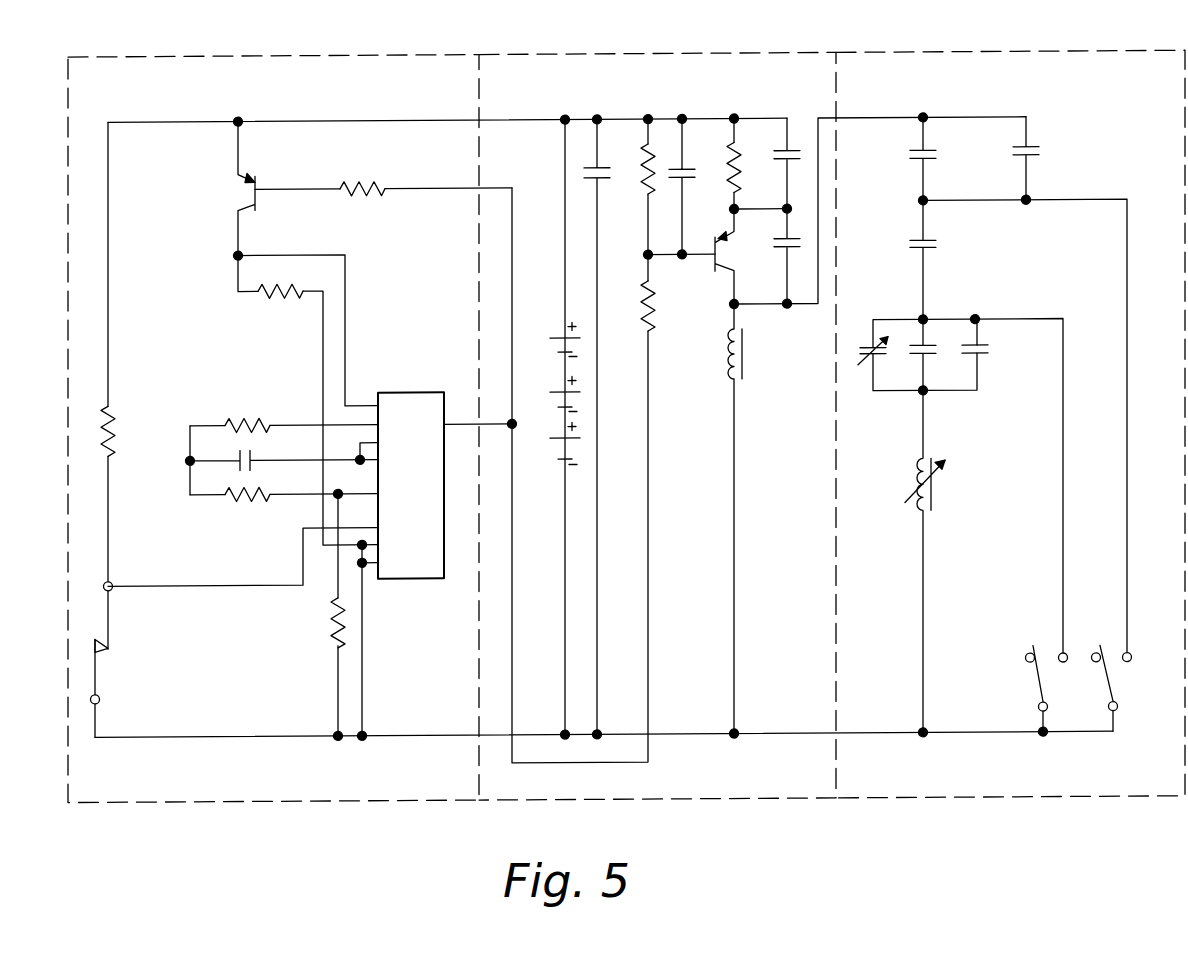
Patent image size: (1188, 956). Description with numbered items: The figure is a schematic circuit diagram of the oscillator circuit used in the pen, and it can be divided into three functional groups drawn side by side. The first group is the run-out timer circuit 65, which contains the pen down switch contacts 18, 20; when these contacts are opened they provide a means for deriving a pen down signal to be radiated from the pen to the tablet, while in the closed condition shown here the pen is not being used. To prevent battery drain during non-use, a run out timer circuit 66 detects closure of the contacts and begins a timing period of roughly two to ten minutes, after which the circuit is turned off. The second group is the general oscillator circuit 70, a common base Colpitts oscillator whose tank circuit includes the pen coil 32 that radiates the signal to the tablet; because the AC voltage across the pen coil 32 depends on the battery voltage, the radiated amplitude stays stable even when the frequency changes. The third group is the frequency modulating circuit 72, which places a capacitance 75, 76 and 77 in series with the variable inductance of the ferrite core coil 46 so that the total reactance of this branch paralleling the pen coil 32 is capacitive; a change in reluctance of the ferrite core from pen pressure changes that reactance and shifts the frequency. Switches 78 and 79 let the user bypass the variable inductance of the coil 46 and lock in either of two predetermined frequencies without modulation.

The pen down switch contact 18 is at (96, 681).
The pen down switch contact 20 is at (110, 622).
The pen coil 32 is at (730, 378).
The ferrite core coil 46 is at (915, 465).
The run-out timer circuit 65 is at (275, 58).
The run out timer circuit 66 is at (430, 582).
The general oscillator circuit 70 is at (726, 53).
The frequency modulating circuit 72 is at (992, 50).
The capacitance 75 is at (870, 345).
The capacitance 76 is at (932, 346).
The capacitance 77 is at (988, 346).
The switch 78 is at (1038, 682).
The switch 79 is at (1108, 686).